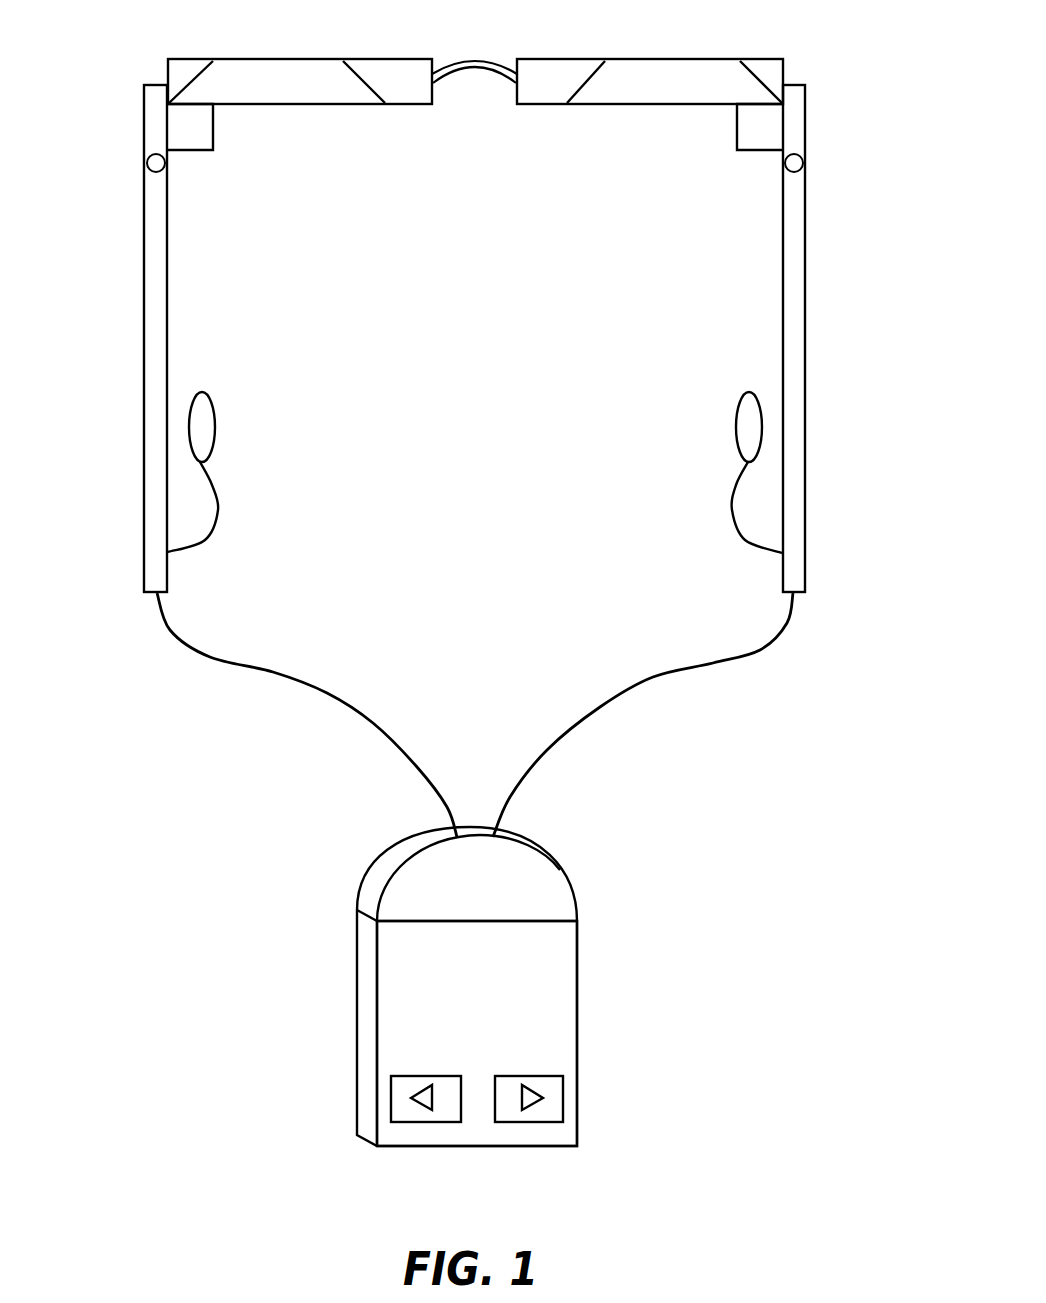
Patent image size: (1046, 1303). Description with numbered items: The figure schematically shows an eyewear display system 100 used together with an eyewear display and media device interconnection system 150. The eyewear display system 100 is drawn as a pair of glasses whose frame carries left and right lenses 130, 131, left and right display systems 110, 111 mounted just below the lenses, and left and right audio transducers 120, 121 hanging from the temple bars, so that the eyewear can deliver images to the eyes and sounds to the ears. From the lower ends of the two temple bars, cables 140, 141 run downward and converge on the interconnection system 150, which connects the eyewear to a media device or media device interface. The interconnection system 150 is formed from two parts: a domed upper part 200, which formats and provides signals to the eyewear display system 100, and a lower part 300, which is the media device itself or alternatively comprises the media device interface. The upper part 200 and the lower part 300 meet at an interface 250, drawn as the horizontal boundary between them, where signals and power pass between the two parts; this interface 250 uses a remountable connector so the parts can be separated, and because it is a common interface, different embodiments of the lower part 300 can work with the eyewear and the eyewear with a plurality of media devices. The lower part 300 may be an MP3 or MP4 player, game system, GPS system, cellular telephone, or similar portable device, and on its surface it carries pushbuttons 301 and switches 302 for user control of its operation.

The eyewear display system 100 is at (478, 357).
The left display system 110 is at (215, 130).
The right display system 111 is at (736, 135).
The left audio transducer 120 is at (216, 427).
The right audio transducer 121 is at (735, 425).
The left lens 130 is at (291, 75).
The right lens 131 is at (665, 75).
The cable 140 is at (360, 715).
The cable 141 is at (572, 728).
The eyewear display and media device interconnection system 150 is at (310, 913).
The upper part 200 is at (548, 873).
The interface 250 is at (612, 918).
The lower part / media device 300 is at (540, 987).
The pushbuttons 301 is at (422, 1085).
The switches 302 is at (532, 1085).